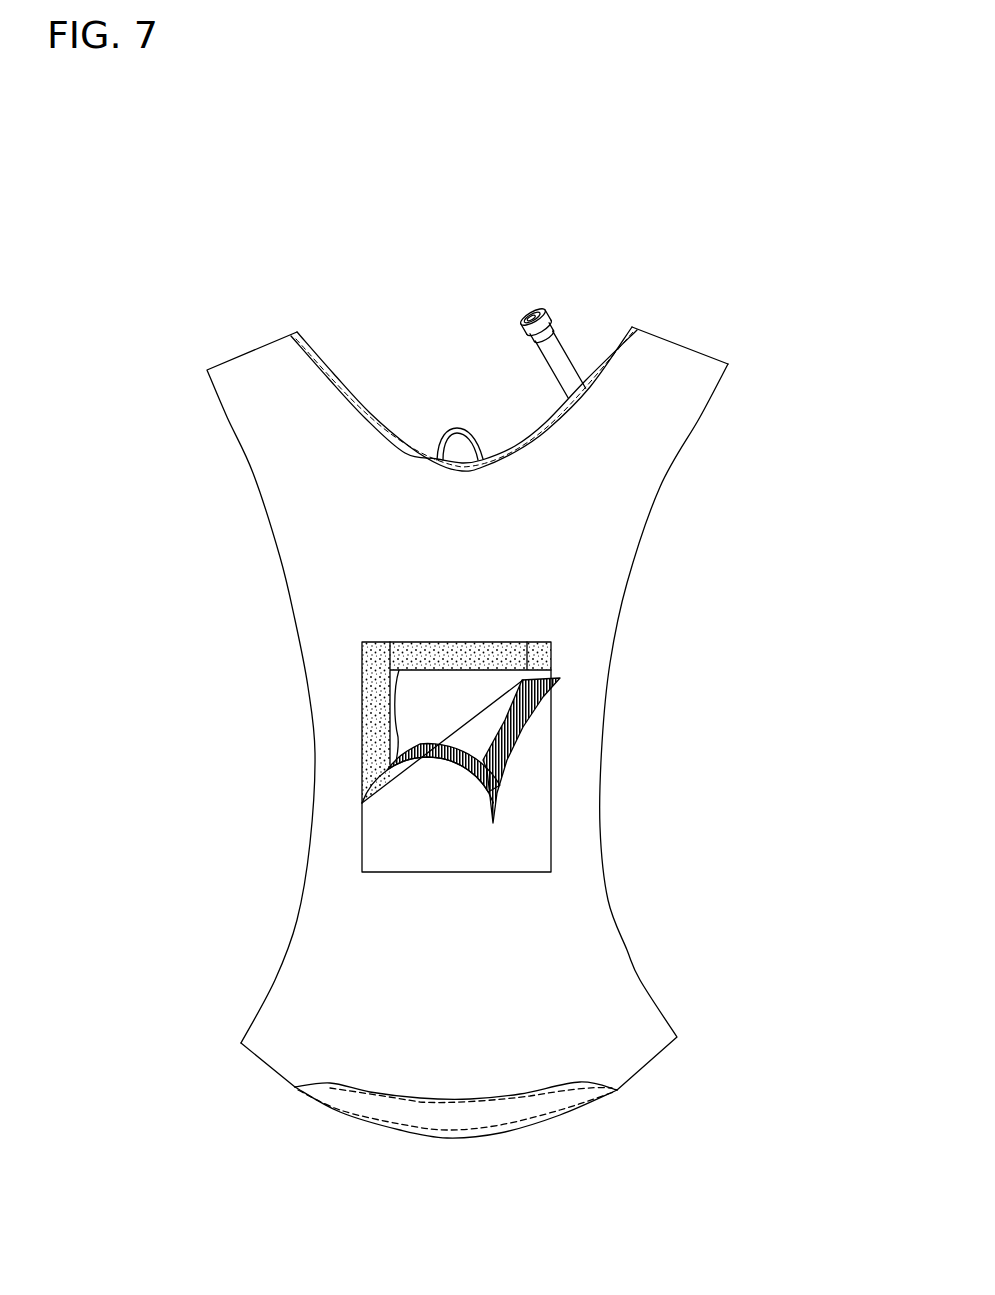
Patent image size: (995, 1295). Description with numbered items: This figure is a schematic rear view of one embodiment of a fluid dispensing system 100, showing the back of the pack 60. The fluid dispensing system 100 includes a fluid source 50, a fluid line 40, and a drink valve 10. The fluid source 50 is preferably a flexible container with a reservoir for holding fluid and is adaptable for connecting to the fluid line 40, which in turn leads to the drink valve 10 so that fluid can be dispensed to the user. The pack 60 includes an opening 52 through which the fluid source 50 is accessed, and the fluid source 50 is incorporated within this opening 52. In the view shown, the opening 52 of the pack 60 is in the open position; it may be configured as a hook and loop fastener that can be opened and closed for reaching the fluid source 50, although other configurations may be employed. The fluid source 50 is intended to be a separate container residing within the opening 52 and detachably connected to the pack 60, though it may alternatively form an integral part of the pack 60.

The fluid dispensing system 100 is at (123, 427).
The pack 60 is at (225, 638).
The drink valve 10 is at (560, 303).
The fluid line 40 is at (542, 362).
The fluid source 50 is at (452, 708).
The opening 52 is at (485, 685).